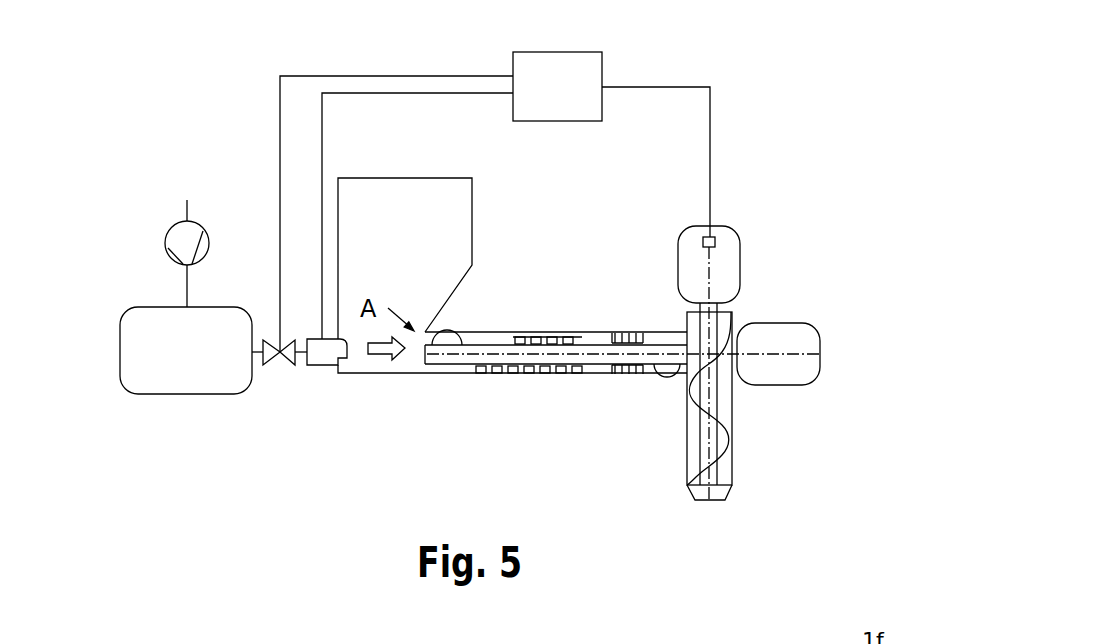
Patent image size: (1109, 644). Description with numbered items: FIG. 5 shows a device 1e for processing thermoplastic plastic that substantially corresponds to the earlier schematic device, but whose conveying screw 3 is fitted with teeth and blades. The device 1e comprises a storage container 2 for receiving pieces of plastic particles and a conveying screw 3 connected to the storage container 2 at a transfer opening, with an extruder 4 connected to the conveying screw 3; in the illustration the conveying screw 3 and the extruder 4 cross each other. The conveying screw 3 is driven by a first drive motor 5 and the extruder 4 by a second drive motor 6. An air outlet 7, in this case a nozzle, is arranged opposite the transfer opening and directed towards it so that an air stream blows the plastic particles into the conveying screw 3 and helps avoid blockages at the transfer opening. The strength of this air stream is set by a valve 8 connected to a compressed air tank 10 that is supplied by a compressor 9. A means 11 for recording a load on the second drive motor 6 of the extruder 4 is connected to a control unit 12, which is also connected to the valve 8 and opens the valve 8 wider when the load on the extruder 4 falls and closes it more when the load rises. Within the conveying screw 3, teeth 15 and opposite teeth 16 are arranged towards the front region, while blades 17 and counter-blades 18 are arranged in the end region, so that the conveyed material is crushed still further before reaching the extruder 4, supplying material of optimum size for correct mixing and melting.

The device 1e is at (816, 53).
The storage container 2 is at (462, 232).
The conveying screw 3 is at (452, 338).
The extruder 4 is at (722, 448).
The first drive motor 5 is at (785, 372).
The second drive motor 6 is at (728, 268).
The air outlet 7 is at (327, 357).
The valve 8 is at (292, 353).
The compressor 9 is at (172, 252).
The compressed air tank 10 is at (180, 385).
The means for recording a load 11 is at (713, 240).
The control unit 12 is at (592, 75).
The teeth 15 is at (487, 367).
The opposite teeth 16 is at (537, 370).
The blades 17 is at (615, 335).
The counter-blades 18 is at (617, 368).